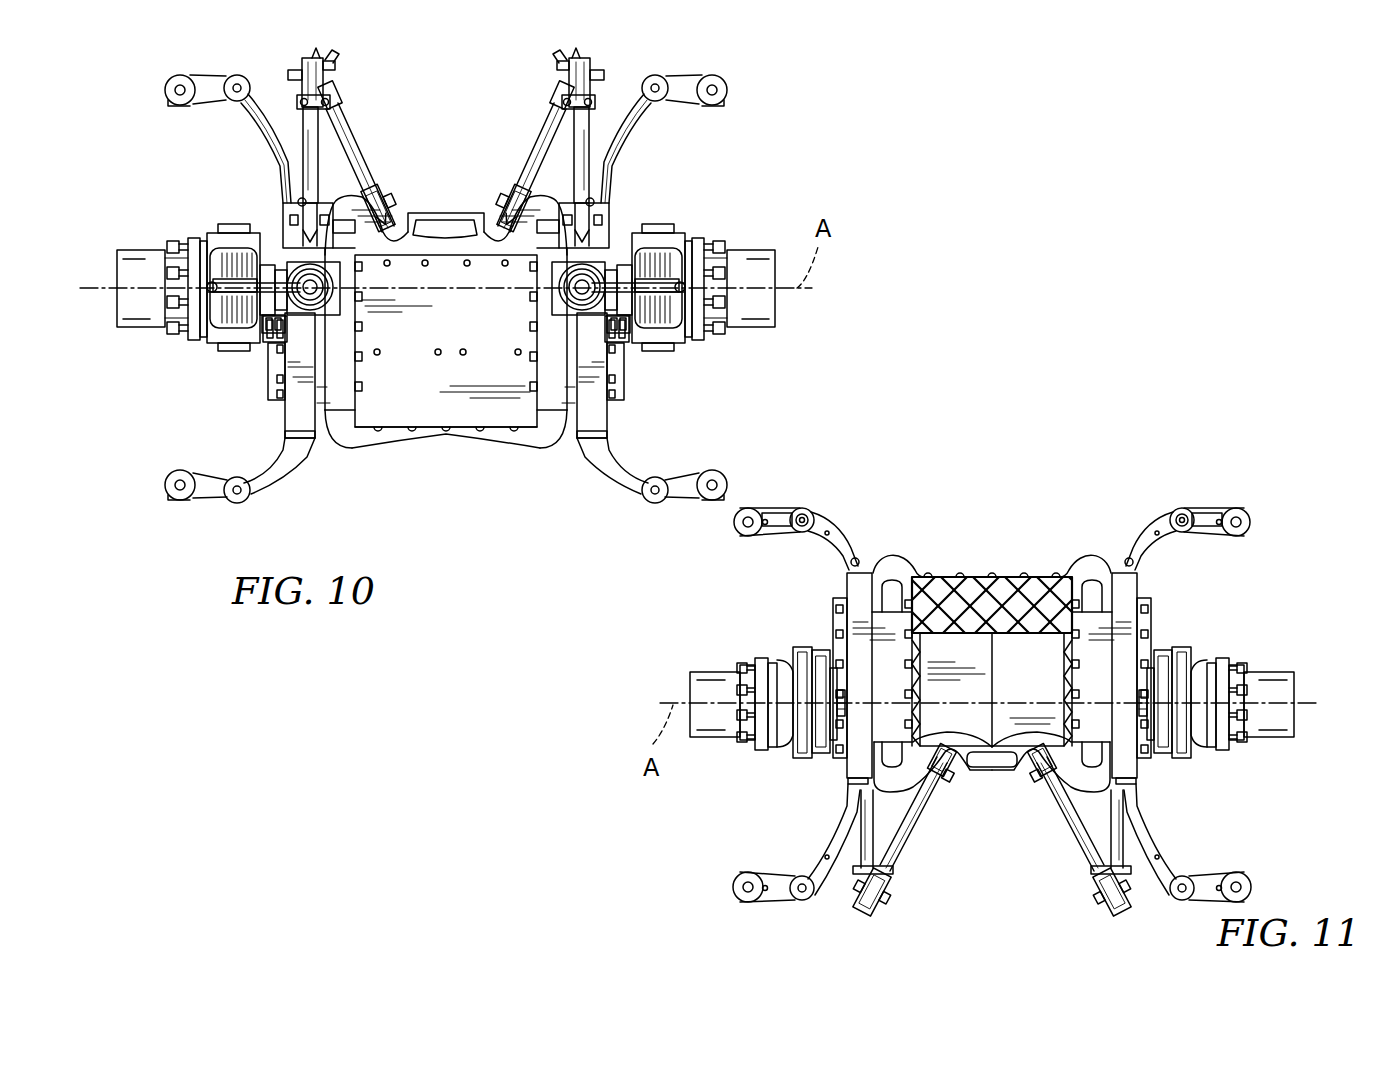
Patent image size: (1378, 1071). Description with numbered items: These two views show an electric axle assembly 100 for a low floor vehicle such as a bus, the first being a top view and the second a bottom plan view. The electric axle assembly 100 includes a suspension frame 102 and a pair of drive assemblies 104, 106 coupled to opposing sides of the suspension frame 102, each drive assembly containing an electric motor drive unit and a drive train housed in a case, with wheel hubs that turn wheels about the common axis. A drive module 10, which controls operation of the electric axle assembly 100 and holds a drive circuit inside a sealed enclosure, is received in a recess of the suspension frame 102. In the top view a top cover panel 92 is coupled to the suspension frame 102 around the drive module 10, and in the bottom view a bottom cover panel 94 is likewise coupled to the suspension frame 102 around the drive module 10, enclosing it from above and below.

In FIG. 10, the drive module 10 is at (426, 354).
In FIG. 11, the drive module 10 is at (1020, 664).
In FIG. 10, the top cover panel 92 is at (455, 411).
In FIG. 11, the bottom cover panel 94 is at (951, 610).
In FIG. 10, the electric axle assembly 100 is at (459, 266).
In FIG. 11, the electric axle assembly 100 is at (989, 641).
In FIG. 10, the suspension frame 102 is at (449, 210).
In FIG. 11, the suspension frame 102 is at (998, 780).
In FIG. 10, the drive assembly 104 is at (212, 219).
In FIG. 11, the drive assembly 104 is at (768, 645).
In FIG. 10, the drive assembly 106 is at (654, 218).
In FIG. 11, the drive assembly 106 is at (1218, 643).